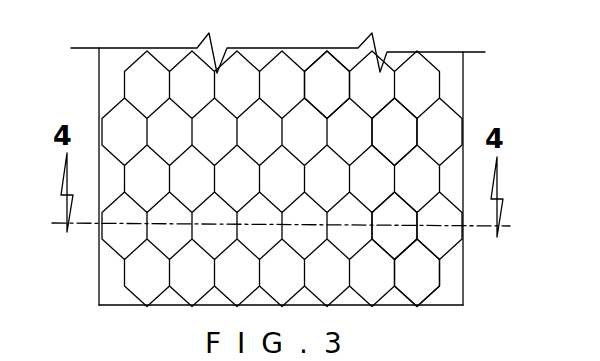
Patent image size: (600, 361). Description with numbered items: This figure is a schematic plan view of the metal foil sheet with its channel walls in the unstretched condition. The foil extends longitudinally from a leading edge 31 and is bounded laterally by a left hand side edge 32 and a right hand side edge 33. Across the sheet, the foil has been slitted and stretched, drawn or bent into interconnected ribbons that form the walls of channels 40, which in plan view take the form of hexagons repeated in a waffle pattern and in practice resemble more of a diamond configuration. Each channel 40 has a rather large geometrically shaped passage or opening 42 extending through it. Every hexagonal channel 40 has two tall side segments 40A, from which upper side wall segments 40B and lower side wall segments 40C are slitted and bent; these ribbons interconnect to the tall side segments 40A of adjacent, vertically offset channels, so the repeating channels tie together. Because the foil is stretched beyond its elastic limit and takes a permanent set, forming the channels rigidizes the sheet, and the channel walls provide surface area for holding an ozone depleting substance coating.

The channel 40 is at (148, 127).
The tall side segment 40A is at (393, 179).
The upper side wall segment 40B is at (422, 252).
The lower side wall segment 40C is at (337, 110).
The opening 42 is at (400, 137).
The leading edge 31 is at (356, 306).
The left hand side edge 32 is at (99, 276).
The right hand side edge 33 is at (463, 263).